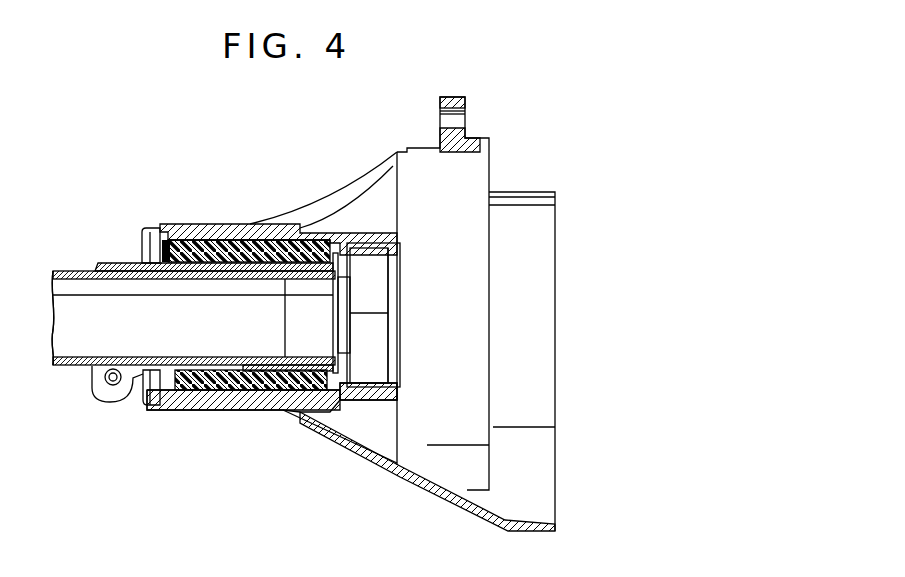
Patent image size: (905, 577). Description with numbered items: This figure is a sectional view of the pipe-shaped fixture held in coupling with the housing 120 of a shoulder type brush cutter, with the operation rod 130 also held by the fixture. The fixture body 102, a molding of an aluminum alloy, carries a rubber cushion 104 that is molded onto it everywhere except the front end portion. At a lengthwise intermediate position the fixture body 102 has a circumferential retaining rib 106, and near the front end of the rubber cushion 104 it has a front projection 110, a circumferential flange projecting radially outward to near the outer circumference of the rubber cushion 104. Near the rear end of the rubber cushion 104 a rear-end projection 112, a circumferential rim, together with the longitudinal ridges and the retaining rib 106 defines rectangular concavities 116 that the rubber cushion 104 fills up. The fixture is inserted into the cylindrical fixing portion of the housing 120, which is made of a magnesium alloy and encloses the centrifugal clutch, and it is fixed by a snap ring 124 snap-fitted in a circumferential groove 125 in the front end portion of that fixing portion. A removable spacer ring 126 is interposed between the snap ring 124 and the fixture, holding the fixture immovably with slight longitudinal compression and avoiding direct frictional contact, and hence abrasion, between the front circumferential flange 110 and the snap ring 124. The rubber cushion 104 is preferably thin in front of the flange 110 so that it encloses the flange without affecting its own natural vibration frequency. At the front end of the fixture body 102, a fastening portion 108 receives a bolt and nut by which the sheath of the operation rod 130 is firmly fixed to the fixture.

The fixture body 102 is at (110, 263).
The rubber cushion 104 is at (236, 243).
The circumferential retaining rib 106 is at (193, 392).
The fastening portion 108 is at (113, 381).
The front projection (front circumferential flange) 110 is at (211, 240).
The rear-end projection 112 is at (325, 405).
The concavities 116 is at (287, 397).
The housing 120 is at (405, 472).
The snap ring 124 is at (143, 232).
The circumferential groove 125 is at (155, 400).
The removable spacer ring 126 is at (170, 238).
The operation rod 130 is at (79, 371).